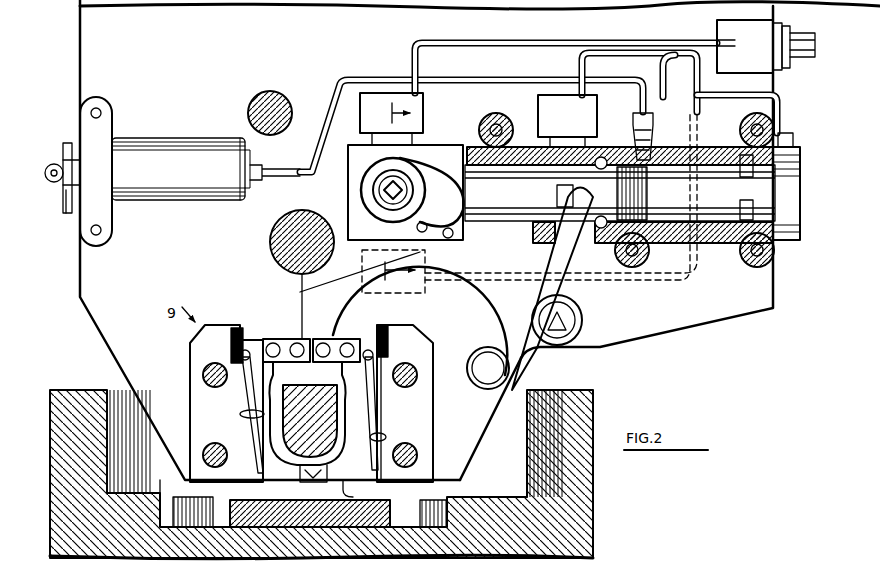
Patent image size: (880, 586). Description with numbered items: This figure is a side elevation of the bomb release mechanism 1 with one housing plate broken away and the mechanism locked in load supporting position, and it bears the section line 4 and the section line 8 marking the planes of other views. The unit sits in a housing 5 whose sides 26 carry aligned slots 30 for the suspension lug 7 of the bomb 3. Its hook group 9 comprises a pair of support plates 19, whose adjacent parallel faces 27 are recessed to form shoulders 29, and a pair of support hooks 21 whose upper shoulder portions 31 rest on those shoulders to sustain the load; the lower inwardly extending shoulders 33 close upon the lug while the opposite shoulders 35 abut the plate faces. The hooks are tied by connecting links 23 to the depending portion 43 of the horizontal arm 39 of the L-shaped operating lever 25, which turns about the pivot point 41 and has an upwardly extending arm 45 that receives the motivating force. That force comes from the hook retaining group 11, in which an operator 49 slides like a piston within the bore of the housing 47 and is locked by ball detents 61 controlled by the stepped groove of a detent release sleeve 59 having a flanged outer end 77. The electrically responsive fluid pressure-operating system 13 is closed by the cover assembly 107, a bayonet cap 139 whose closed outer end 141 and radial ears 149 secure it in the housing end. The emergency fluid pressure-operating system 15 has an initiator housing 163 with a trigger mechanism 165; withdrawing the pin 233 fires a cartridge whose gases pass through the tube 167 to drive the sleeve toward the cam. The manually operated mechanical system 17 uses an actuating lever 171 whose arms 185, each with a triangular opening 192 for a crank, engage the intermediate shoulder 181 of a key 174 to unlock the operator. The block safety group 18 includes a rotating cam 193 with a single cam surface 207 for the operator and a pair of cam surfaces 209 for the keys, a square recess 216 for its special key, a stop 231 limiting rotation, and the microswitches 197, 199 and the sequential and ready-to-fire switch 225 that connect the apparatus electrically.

The bomb release mechanism 1 is at (72, 42).
The bomb 3 is at (70, 498).
The section line 4- 4 is at (155, 357).
The housing 5 is at (47, 78).
The suspension lug 7 is at (320, 433).
The section line 8- 8 is at (603, 83).
The hook group 9 is at (345, 207).
The hook retaining group 11 is at (503, 232).
The electrically responsive fluid pressure-operating system 13 is at (717, 227).
The emergency fluid pressure-operating system 15 is at (190, 171).
The manually operated mechanical system 17 is at (593, 308).
The block safety group 18 is at (460, 130).
The support plates 19 is at (192, 412).
The support hooks 21 is at (250, 340).
The connecting links 23 is at (285, 343).
The operating lever 25 is at (477, 403).
The housing sides 26 is at (75, 328).
The support plate faces 27 is at (240, 412).
The support plate shoulders 29 is at (233, 360).
The slots 30 is at (290, 430).
The upper shoulder portions 31 is at (235, 362).
The inwardly extending shoulder portions 33 is at (313, 484).
The outer lower shoulders 35 is at (367, 477).
The horizontal lever arm 39 is at (300, 292).
The pivot point 41 is at (480, 400).
The depending portion 43 is at (315, 342).
The upwardly extending lever arm 45 is at (545, 238).
The hook retaining group housing 47 is at (537, 150).
The operator 49 is at (523, 157).
The detent release sleeve 59 is at (633, 197).
The ball detents 61 is at (602, 160).
The flanged outer end 77 is at (667, 143).
The cover assembly 107 is at (783, 250).
The cap 139 is at (800, 200).
The outer end of cap 141 is at (790, 165).
The ears 149 is at (747, 153).
The initiator housing 163 is at (140, 157).
The trigger mechanism 165 is at (53, 190).
The tube 167 is at (483, 80).
The actuating lever 171 is at (590, 296).
The key 174 is at (500, 195).
The intermediate shoulder 181 is at (560, 193).
The arms 185 is at (550, 287).
The triangular opening 192 is at (593, 337).
The rotating cam 193 is at (362, 167).
The microswitch 197 is at (400, 97).
The microswitch 199 is at (427, 290).
The single cam surface 207 is at (450, 228).
The pair of cam surfaces 209 is at (420, 227).
The square recess 216 is at (397, 193).
The sequential and ready-to-fire switch 225 is at (570, 97).
The stop 231 is at (272, 243).
The pin 233 is at (50, 157).